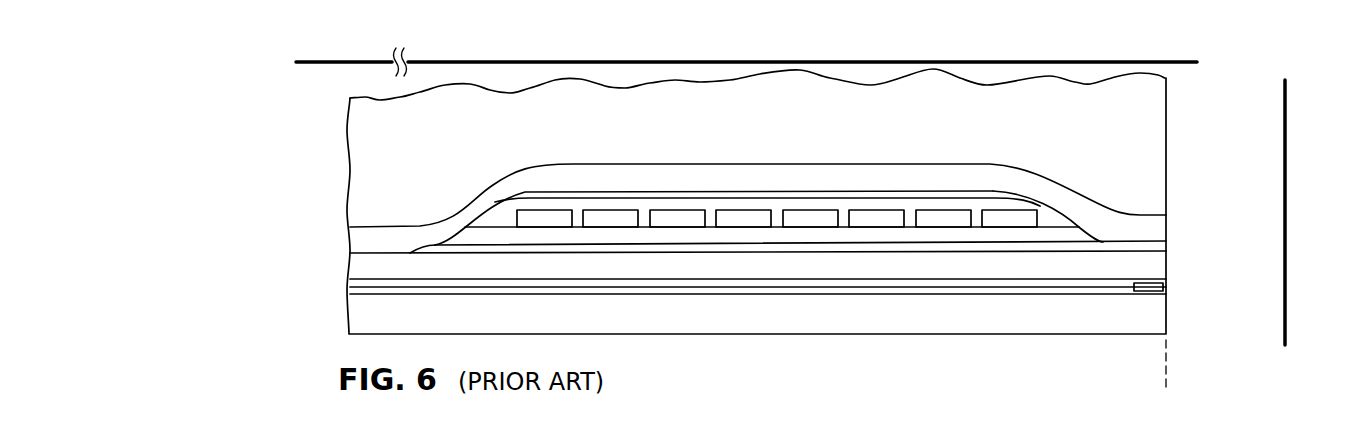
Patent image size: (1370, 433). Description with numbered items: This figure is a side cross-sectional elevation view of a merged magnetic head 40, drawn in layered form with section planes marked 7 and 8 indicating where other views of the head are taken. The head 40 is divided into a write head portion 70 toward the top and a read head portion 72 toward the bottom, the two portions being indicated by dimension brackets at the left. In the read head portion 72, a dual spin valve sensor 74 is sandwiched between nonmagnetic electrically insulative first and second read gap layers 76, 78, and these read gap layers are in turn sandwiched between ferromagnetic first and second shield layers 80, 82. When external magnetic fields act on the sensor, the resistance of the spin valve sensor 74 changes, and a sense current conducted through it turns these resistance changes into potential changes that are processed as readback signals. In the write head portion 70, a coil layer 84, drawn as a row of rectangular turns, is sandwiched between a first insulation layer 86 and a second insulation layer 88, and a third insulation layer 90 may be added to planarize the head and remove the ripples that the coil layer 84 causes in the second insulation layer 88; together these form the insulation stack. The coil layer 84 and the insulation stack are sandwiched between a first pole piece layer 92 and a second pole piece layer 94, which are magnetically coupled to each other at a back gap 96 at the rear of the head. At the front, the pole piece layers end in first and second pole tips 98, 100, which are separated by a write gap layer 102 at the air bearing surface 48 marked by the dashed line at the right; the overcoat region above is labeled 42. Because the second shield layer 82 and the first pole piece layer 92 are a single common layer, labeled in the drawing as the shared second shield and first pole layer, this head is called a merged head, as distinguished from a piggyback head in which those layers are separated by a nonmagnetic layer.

The merged magnetic head 40 is at (326, 109).
The overcoat layer 42 is at (1150, 113).
The air bearing surface (ABS) 48 is at (1168, 378).
The write head portion 70 is at (340, 255).
The read head portion 72 is at (340, 337).
The dual spin valve sensor 74 is at (1165, 285).
The first read gap layer 76 is at (825, 295).
The second read gap layer 78 is at (793, 279).
The first shield layer 80 is at (905, 320).
The second shield layer 82 is at (758, 321).
The first pole piece layer 92 is at (1009, 265).
The coil layer 84 is at (738, 212).
The first insulation layer 86 is at (683, 237).
The second insulation layer 88 is at (1052, 217).
The third insulation layer 90 is at (580, 192).
The second pole piece layer 94 is at (917, 173).
The back gap 96 is at (385, 253).
The first pole tip 98 is at (1165, 262).
The second pole tip 100 is at (1157, 220).
The write gap layer 102 is at (1163, 241).
The plane 7- 7 is at (1342, 338).
The plane 8- 8 is at (1192, 50).